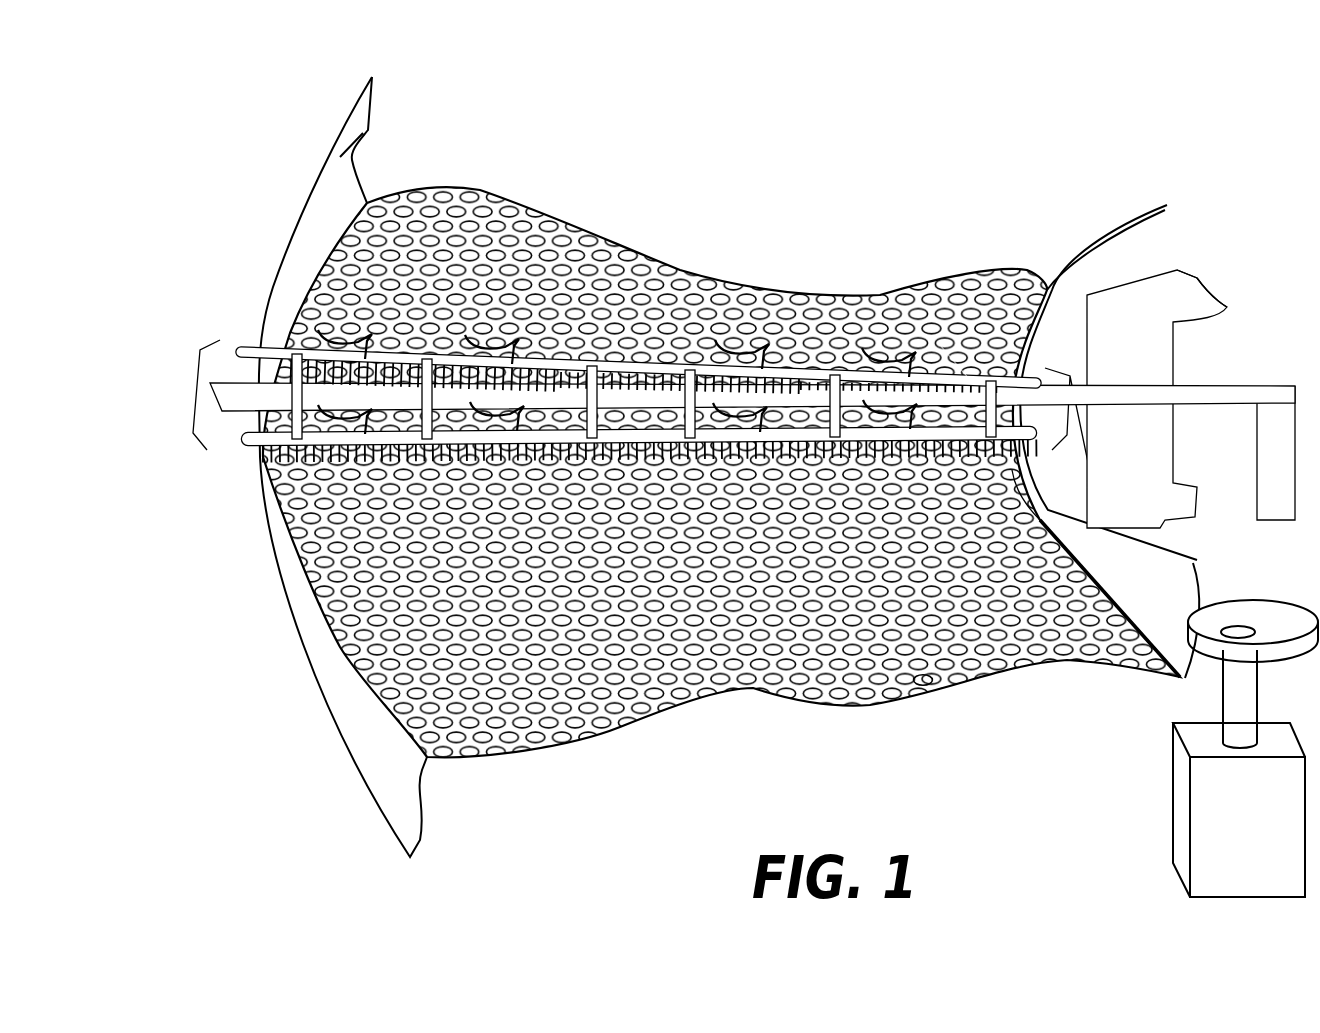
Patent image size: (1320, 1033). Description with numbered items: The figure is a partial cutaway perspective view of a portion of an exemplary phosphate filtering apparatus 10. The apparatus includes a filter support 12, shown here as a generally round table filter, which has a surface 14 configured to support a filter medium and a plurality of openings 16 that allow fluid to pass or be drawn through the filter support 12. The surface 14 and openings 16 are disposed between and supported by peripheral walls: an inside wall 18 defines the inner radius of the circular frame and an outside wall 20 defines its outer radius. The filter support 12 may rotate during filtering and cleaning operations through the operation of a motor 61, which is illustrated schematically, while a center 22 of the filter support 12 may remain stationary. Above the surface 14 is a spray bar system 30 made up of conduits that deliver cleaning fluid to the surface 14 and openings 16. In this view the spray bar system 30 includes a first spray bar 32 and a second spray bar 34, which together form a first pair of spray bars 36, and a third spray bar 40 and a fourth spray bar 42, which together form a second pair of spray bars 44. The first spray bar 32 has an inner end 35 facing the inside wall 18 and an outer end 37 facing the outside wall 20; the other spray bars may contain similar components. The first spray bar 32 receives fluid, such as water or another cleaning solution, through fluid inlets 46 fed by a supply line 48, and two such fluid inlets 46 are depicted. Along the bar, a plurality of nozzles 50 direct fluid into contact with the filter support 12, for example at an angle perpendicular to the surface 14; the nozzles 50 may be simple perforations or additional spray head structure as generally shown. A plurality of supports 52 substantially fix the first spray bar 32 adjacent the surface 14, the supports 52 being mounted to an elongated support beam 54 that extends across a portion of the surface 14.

The phosphate filtering apparatus 10 is at (178, 120).
The filter support 12 is at (990, 712).
The surface 14 is at (692, 660).
The openings 16 is at (857, 700).
The inside wall 18 is at (1088, 235).
The outside wall 20 is at (365, 133).
The center 22 is at (1207, 297).
The spray bar system 30 is at (613, 485).
The first spray bar 32 is at (968, 490).
The second spray bar 34 is at (957, 377).
The inner end 35 is at (1055, 478).
The first pair of spray bars 36 is at (1087, 415).
The outer end 37 is at (553, 447).
The third spray bar 40 is at (470, 350).
The fourth spray bar 42 is at (547, 357).
The second pair of spray bars 44 is at (576, 424).
The fluid inlet 46 is at (917, 377).
The supply line 48 is at (727, 357).
The nozzles 50 is at (963, 455).
The supports 52 is at (800, 448).
The elongated support beam 54 is at (237, 407).
The motor 61 is at (1170, 822).